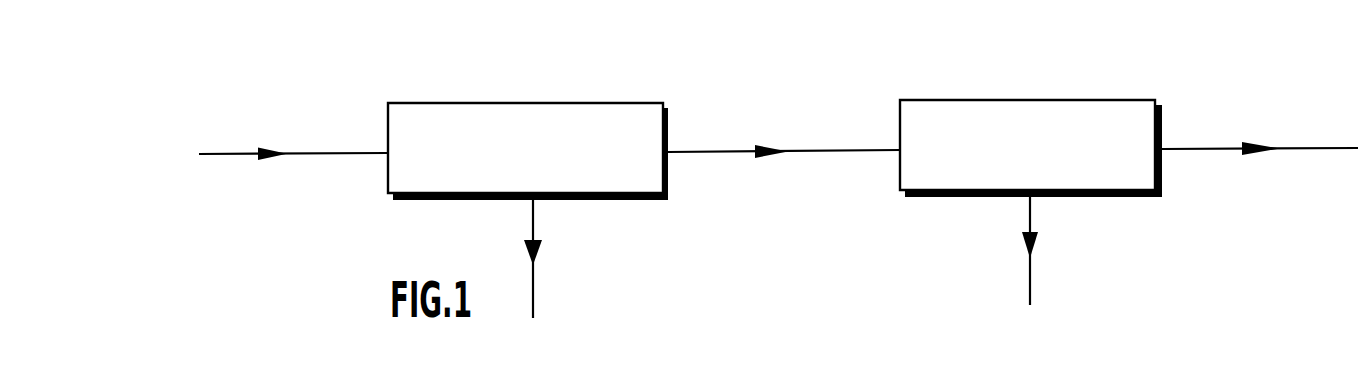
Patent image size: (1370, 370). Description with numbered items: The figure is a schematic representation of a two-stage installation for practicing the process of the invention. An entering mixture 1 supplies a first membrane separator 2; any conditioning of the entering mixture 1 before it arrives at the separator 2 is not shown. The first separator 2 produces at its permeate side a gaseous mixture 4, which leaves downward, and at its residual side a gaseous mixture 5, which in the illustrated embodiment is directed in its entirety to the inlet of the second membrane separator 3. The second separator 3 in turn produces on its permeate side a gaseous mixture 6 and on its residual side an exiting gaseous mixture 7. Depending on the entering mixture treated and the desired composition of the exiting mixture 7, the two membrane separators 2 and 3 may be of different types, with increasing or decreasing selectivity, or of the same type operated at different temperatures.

The entering mixture 1 is at (245, 145).
The first membrane separator 2 is at (503, 98).
The second membrane separator 3 is at (1000, 96).
The gaseous mixture 4 is at (546, 287).
The gaseous mixture 5 is at (736, 134).
The gaseous mixture 6 is at (1040, 275).
The gaseous mixture 7 is at (1190, 134).